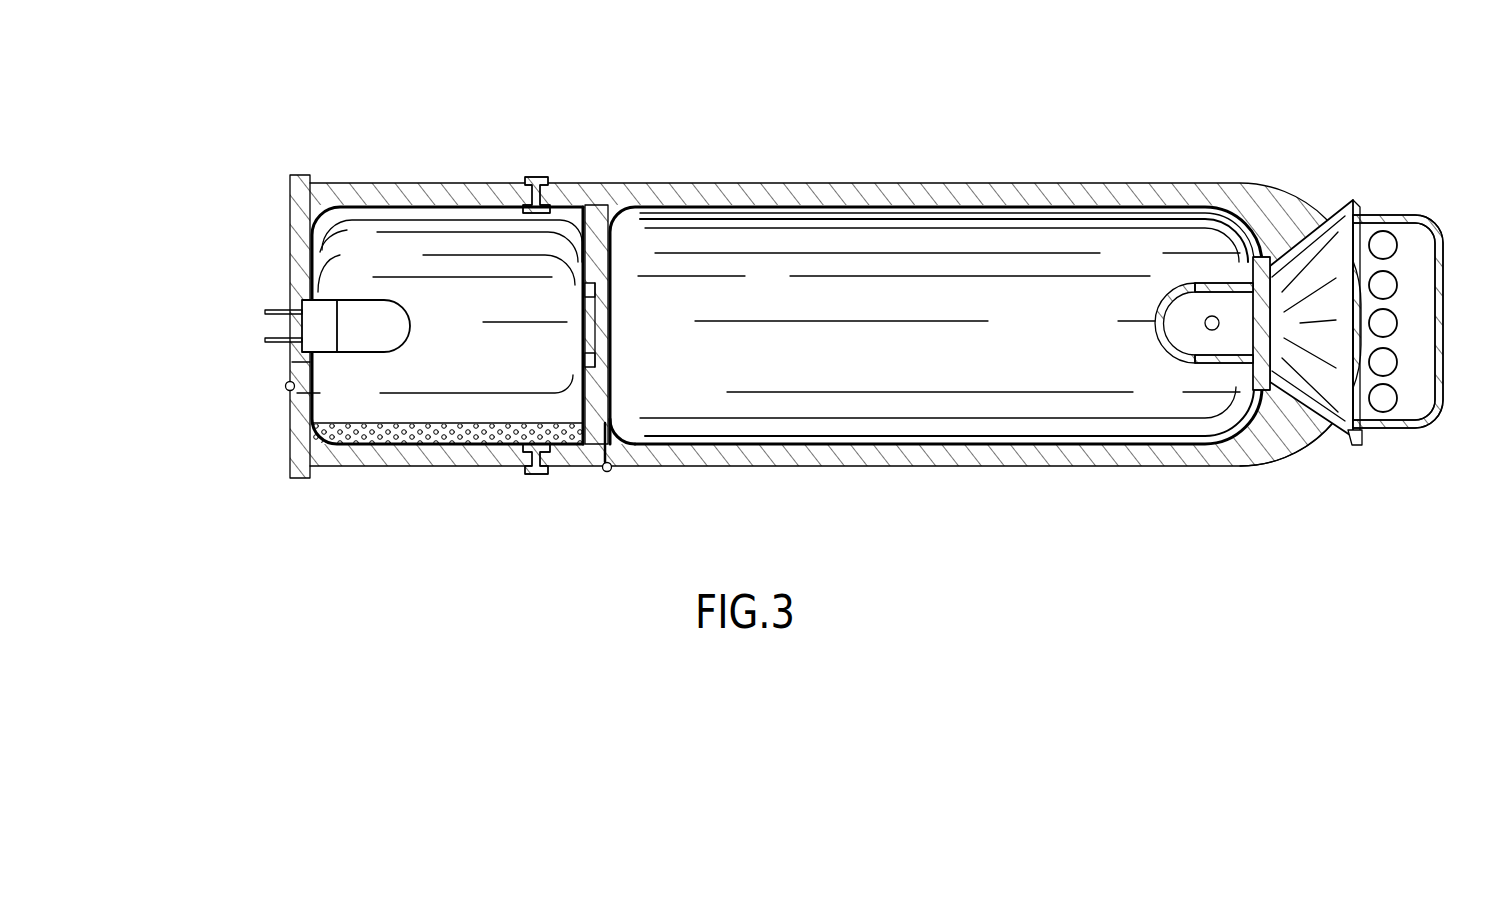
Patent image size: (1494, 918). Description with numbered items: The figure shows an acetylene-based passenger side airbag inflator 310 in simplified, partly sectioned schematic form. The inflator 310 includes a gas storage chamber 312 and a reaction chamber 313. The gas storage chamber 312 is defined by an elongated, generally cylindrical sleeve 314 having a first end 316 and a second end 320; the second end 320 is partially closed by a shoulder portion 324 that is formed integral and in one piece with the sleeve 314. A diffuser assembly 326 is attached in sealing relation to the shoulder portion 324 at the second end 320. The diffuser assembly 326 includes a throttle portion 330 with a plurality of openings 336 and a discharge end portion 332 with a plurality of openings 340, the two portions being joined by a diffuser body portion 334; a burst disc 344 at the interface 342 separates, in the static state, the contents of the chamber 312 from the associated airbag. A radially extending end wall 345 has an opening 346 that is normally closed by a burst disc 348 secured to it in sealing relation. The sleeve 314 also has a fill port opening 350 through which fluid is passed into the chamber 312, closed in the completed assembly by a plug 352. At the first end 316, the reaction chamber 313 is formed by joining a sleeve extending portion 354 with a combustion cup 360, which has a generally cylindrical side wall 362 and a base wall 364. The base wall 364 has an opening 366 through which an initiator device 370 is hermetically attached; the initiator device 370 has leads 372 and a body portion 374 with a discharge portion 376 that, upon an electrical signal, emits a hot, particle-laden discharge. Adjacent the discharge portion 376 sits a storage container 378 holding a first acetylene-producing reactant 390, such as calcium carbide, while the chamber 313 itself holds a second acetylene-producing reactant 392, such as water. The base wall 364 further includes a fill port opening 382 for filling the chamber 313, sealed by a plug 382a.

The passenger side airbag inflator 310 is at (886, 128).
The gas storage chamber 312 is at (938, 228).
The reaction chamber 313 is at (345, 215).
The sleeve 314 is at (1030, 183).
The first end 316 is at (582, 161).
The second end 320 is at (1302, 176).
The shoulder portion 324 is at (1281, 450).
The diffuser assembly 326 is at (1357, 188).
The throttle portion 330 is at (1176, 284).
The discharge end portion 332 is at (1433, 418).
The diffuser body portion 334 is at (1328, 436).
The openings 336 is at (1210, 331).
The openings 340 is at (1391, 236).
The interface 342 is at (1262, 258).
The burst disc 344 is at (1274, 320).
The end wall 345 is at (595, 260).
The opening 346 is at (607, 323).
The burst disc 348 is at (590, 334).
The fill port opening 350 is at (622, 437).
The plug 352 is at (611, 473).
The sleeve extending portion 354 is at (565, 470).
The combustion cup 360 is at (381, 469).
The side wall 362 is at (468, 183).
The base wall 364 is at (295, 480).
The opening 366 is at (291, 366).
The initiator device 370 is at (305, 300).
The leads 372 is at (264, 340).
The body portion 374 is at (345, 251).
The discharge portion 376 is at (452, 392).
The storage container 378 is at (353, 297).
The fill port opening 382 is at (299, 395).
The plug 382a is at (286, 389).
The first acetylene-producing reactant 390 is at (420, 334).
The second acetylene-producing reactant 392 is at (445, 420).